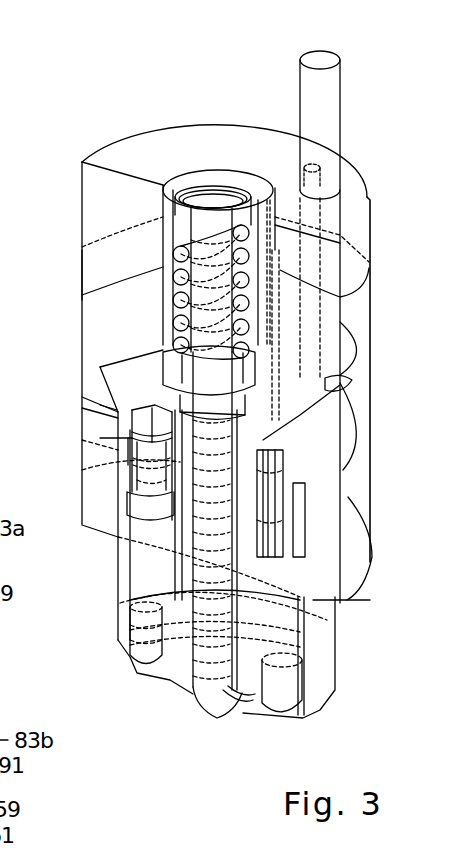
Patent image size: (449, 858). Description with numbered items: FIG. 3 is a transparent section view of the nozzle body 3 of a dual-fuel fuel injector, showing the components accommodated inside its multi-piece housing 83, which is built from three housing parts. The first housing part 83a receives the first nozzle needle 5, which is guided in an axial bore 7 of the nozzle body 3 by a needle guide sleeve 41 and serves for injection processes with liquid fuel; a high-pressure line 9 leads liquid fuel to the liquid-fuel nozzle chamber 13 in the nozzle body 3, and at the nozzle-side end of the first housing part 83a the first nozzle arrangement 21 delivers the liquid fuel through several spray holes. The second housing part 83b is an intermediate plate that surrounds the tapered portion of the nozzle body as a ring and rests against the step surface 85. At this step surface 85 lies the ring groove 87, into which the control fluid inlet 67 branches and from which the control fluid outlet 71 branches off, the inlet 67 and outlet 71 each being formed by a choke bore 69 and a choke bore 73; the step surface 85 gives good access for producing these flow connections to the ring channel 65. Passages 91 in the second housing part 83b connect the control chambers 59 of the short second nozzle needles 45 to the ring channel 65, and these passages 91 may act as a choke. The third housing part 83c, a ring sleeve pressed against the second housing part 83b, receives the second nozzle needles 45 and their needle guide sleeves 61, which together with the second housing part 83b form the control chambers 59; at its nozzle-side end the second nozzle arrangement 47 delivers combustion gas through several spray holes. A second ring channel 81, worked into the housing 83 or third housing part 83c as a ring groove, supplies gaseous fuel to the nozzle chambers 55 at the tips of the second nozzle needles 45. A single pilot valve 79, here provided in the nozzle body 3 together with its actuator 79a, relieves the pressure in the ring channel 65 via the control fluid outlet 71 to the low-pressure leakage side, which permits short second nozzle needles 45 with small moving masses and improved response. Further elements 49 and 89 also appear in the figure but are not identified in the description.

The nozzle body 3 is at (113, 157).
The first nozzle needle 5 is at (207, 222).
The axial bore 7 is at (163, 315).
The high-pressure line 9 is at (278, 138).
The liquid-fuel nozzle chamber 13 is at (197, 660).
The first nozzle arrangement 21 is at (237, 712).
The needle guide sleeve 41 is at (172, 240).
The second nozzle needles 45 is at (143, 571).
The second nozzle arrangement 47 is at (303, 712).
The sealing ring 49 is at (130, 593).
The nozzle chambers 55 is at (128, 623).
The control chambers 59 is at (117, 440).
The needle guide sleeves 61 is at (133, 455).
The ring channel 65 is at (180, 403).
The control fluid inlet 67 is at (310, 168).
The choke bore 69 is at (275, 188).
The control fluid outlet 71 is at (338, 503).
The choke bore 73 is at (343, 497).
The pilot valve 79 is at (340, 385).
The actuator 79a is at (313, 90).
The second ring channel 81 is at (128, 632).
The multi-piece housing 83 is at (70, 248).
The first housing part 83a is at (82, 197).
The second housing part 83b is at (100, 367).
The third housing part 83c is at (92, 512).
The step surface 85 is at (22, 672).
The ring groove 87 is at (31, 708).
The ring 89 is at (100, 367).
The passages 91 is at (82, 408).